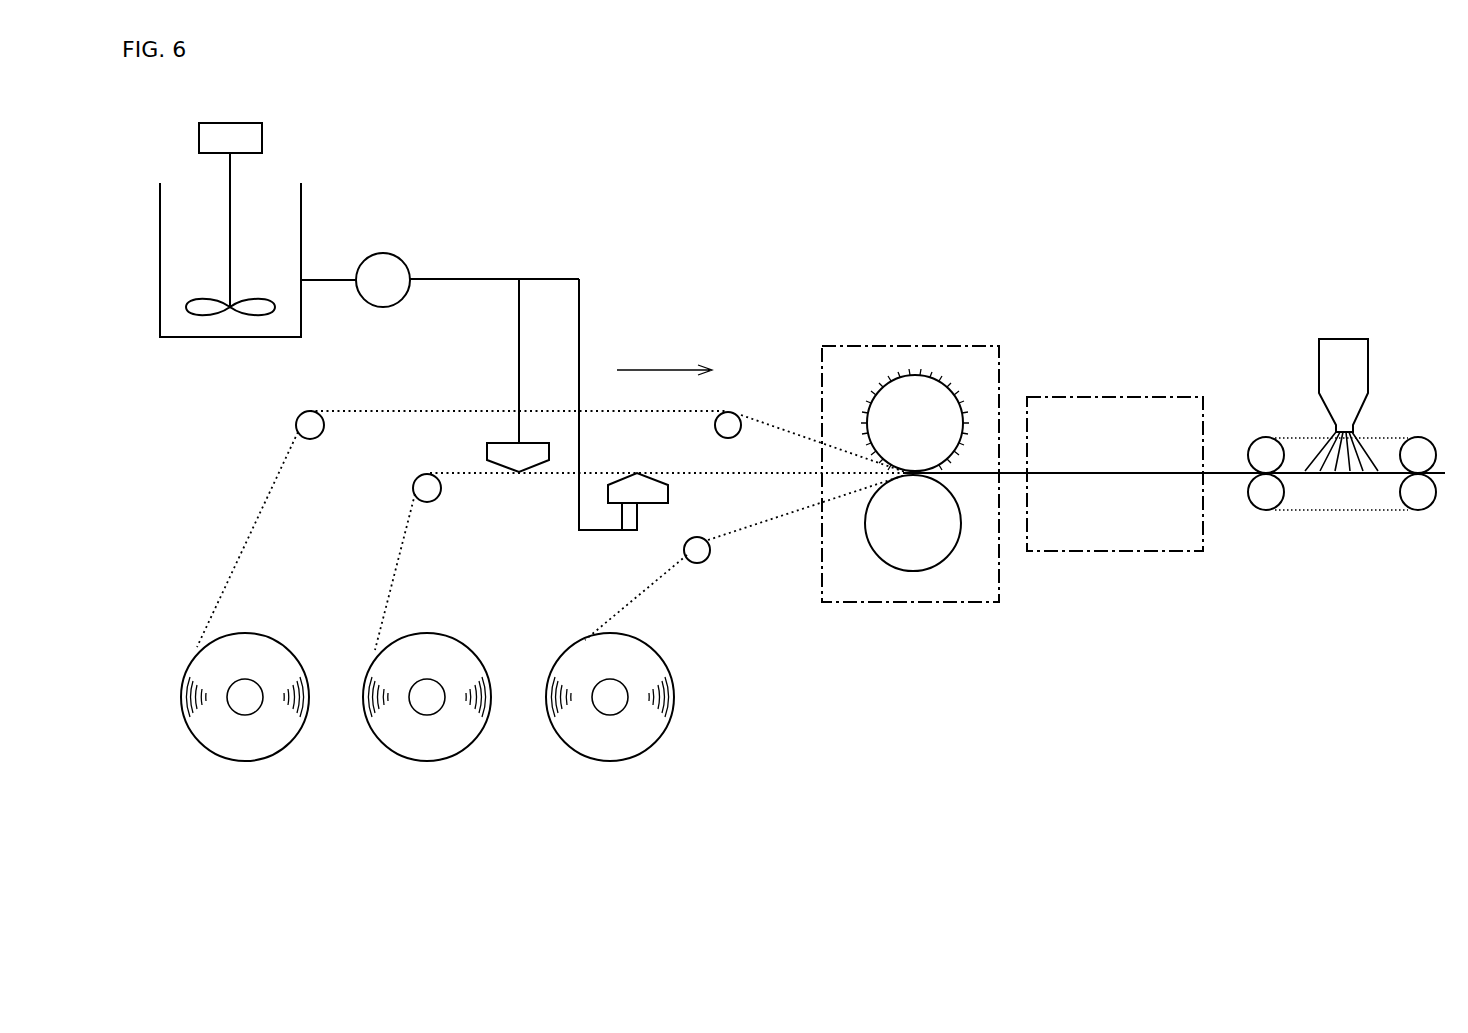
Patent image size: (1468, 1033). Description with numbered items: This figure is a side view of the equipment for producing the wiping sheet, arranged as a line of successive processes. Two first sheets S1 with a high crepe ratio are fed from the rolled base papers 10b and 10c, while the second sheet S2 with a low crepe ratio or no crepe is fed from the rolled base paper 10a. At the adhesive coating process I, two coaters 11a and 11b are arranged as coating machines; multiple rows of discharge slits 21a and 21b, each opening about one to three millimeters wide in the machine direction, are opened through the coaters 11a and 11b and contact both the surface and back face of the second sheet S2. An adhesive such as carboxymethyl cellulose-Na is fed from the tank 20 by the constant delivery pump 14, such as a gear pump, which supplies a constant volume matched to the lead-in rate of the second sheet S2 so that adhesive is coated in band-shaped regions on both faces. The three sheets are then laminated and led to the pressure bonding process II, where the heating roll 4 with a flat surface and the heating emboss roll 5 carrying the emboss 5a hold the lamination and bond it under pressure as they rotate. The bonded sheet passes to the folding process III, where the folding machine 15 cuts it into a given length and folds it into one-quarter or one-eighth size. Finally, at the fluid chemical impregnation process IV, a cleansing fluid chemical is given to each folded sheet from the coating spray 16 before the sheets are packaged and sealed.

The tank 20 is at (300, 203).
The constant delivery pump 14 is at (408, 257).
The discharge slit 21a is at (519, 464).
The coater 11a is at (500, 457).
The discharge slit 21b is at (637, 478).
The coater 11b is at (623, 500).
The adhesive coating process I is at (600, 355).
The rolled base paper 10a is at (420, 770).
The rolled base paper 10b is at (246, 770).
The rolled base paper 10c is at (603, 770).
The first sheet S1 is at (500, 605).
The second sheet S2 is at (467, 600).
The pressure bonding process II is at (935, 332).
The heating emboss roll 5 is at (930, 403).
The emboss 5a is at (888, 378).
The heating roll 4 is at (911, 556).
The folding process III is at (1080, 365).
The folding machine 15 is at (1143, 393).
The fluid chemical impregnation process IV is at (1388, 350).
The coating spray 16 is at (1355, 383).